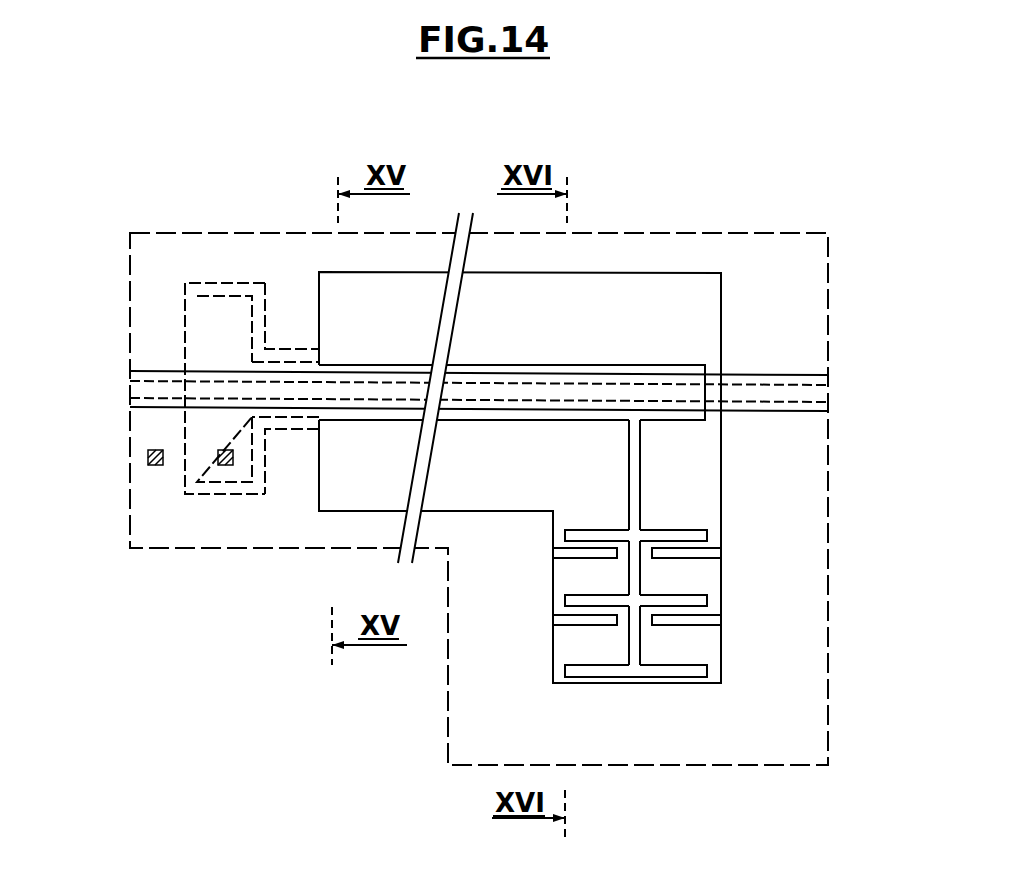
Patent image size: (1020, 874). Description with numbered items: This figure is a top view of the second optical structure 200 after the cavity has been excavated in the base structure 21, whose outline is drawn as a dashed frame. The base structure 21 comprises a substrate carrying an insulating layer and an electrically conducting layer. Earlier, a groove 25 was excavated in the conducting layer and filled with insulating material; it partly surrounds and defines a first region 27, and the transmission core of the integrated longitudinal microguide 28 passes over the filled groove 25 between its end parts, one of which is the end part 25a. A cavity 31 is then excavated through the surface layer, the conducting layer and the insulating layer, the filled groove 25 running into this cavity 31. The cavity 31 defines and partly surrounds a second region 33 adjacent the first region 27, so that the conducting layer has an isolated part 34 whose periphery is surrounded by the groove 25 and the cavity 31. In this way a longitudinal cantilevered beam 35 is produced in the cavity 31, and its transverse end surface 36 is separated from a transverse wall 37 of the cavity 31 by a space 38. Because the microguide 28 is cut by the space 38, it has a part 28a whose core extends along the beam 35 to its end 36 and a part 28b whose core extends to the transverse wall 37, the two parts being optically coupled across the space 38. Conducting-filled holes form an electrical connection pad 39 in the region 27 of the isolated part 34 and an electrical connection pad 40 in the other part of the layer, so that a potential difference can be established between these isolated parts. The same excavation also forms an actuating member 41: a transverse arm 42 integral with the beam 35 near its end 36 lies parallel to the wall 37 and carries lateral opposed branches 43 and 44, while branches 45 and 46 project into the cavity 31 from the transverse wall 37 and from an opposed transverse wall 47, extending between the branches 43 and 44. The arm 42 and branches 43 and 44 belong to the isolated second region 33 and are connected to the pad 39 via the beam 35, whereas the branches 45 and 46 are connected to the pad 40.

The base structure 21 is at (787, 233).
The second optical structure 200 is at (479, 453).
The groove 25 is at (185, 345).
The end part of the groove 25a is at (300, 352).
The first region 27 is at (218, 328).
The integrated longitudinal microguide 28 is at (160, 389).
The part of the microguide 28a is at (359, 399).
The part of the microguide 28b is at (778, 392).
The cavity 31 is at (645, 310).
The second region 33 is at (587, 371).
The isolated part of the conducting layer 34 is at (380, 364).
The longitudinal cantilevered beam 35 is at (663, 373).
The transverse end surface of the beam 36 is at (722, 375).
The transverse wall of the cavity 37 is at (721, 447).
The space 38 is at (710, 400).
The electrical connection pad 39 is at (221, 462).
The electrical connection pad 40 is at (148, 457).
The actuating member 41 is at (690, 592).
The transverse arm 42 is at (636, 507).
The branch 43 is at (595, 597).
The branch 44 is at (683, 647).
The branch 45 is at (590, 619).
The branch 46 is at (688, 620).
The opposed transverse wall of the cavity 47 is at (556, 528).